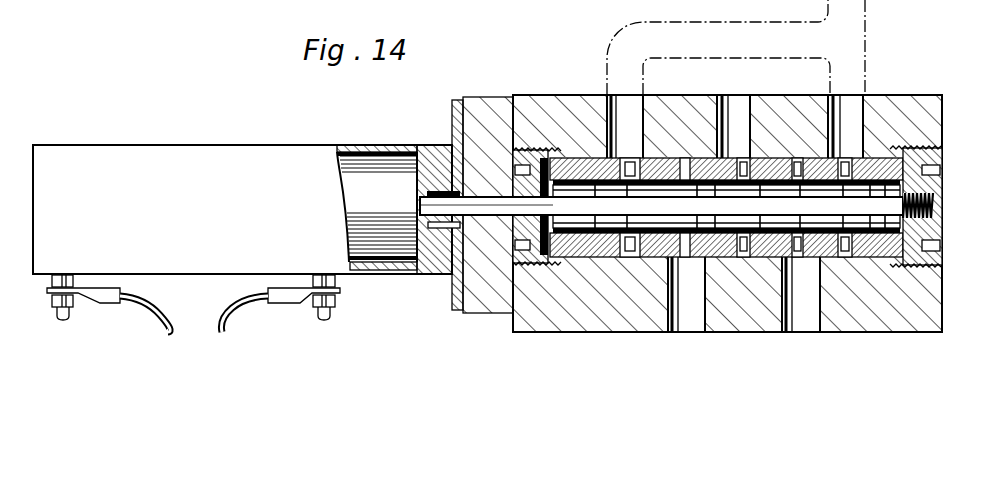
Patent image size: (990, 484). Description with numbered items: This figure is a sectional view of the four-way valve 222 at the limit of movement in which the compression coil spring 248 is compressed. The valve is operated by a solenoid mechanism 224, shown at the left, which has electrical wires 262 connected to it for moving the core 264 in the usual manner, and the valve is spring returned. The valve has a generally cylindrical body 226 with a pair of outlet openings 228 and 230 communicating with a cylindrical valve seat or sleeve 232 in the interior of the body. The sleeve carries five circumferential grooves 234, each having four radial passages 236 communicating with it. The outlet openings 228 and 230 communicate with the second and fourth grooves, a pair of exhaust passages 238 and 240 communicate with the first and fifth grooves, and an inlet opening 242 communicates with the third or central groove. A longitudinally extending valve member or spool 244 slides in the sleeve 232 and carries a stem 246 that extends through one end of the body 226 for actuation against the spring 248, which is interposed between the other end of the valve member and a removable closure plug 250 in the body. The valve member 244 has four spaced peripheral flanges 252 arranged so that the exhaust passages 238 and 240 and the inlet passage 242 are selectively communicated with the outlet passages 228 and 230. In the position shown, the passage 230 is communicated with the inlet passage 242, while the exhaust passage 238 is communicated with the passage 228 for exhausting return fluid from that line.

The four-way valve 222 is at (533, 90).
The solenoid mechanism 224 is at (256, 140).
The cylindrical body 226 is at (892, 96).
The outlet opening 228 is at (694, 326).
The outlet opening 230 is at (808, 332).
The cylindrical valve seat 232 is at (603, 258).
The circumferential grooves 234 is at (628, 256).
The radial passages 236 is at (683, 158).
The exhaust passage 238 is at (607, 95).
The exhaust passage 240 is at (843, 95).
The inlet opening 242 is at (741, 104).
The valve member 244 is at (598, 250).
The stem 246 is at (512, 222).
The compression coil spring 248 is at (910, 192).
The removable closure plug 250 is at (940, 180).
The peripheral flanges 252 is at (897, 255).
The electrical wires 262 is at (238, 312).
The core 264 is at (373, 175).